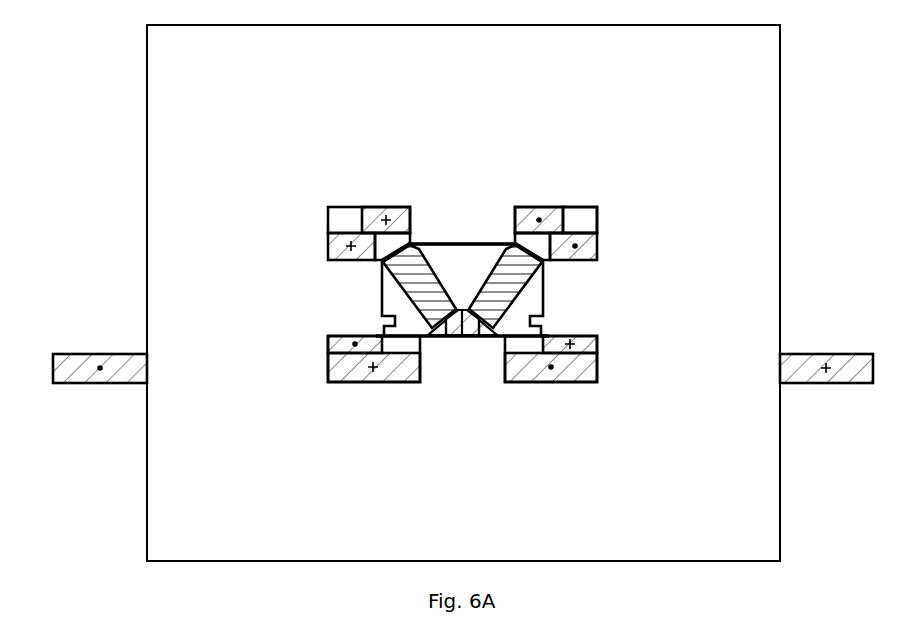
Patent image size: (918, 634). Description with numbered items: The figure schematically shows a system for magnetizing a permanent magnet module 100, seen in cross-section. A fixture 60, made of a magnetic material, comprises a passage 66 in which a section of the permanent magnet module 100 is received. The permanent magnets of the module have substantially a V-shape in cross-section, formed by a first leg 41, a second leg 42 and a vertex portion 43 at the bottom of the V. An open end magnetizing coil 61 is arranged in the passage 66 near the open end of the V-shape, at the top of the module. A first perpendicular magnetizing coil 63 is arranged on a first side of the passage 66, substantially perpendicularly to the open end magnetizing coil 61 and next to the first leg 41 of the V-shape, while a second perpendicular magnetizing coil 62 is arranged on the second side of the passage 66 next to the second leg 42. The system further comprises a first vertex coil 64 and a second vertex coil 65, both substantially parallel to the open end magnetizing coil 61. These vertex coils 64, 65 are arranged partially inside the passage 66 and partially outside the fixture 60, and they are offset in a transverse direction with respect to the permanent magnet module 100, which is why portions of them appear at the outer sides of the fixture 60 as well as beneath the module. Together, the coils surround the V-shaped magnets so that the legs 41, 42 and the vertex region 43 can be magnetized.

The fixture 60 is at (752, 98).
The open end magnetizing coil 61 is at (400, 210).
The second perpendicular magnetizing coil 62 is at (335, 243).
The first perpendicular magnetizing coil 63 is at (590, 247).
The first vertex coil 64 is at (77, 383).
The second vertex coil 65 is at (847, 383).
The passage 66 is at (578, 225).
The permanent magnet module 100 is at (465, 265).
The first leg of the V-shape 41 is at (530, 262).
The second leg of the V-shape 42 is at (398, 255).
The vertex of the V-shape 43 is at (473, 338).